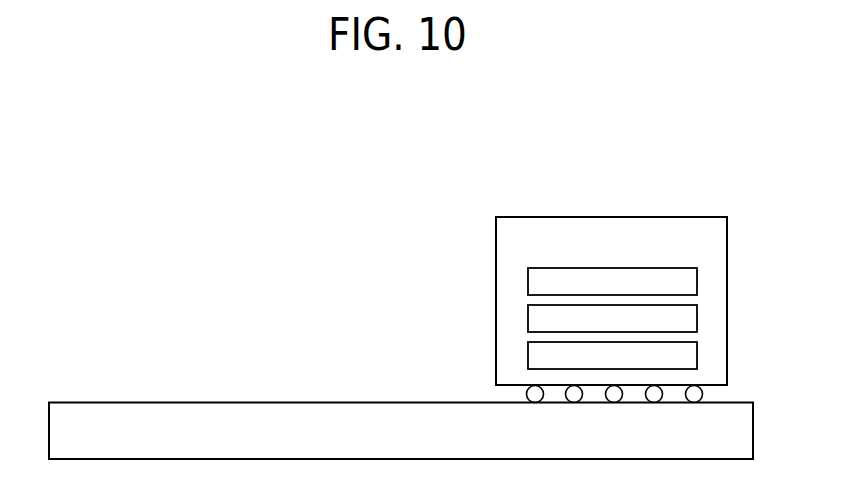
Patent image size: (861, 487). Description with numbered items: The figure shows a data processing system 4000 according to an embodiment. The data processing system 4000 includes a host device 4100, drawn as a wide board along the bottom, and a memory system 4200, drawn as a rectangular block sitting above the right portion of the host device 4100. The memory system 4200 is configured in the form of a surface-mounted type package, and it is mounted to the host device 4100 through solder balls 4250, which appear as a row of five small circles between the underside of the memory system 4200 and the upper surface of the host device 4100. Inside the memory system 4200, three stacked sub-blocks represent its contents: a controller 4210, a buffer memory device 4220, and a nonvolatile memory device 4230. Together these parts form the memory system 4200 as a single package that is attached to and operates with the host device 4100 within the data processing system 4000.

The data processing system 4000 is at (79, 159).
The host device 4100 is at (401, 431).
The memory system 4200 is at (611, 301).
The controller 4210 is at (612, 281).
The buffer memory device 4220 is at (612, 318).
The nonvolatile memory device 4230 is at (612, 355).
The solder balls 4250 is at (712, 394).